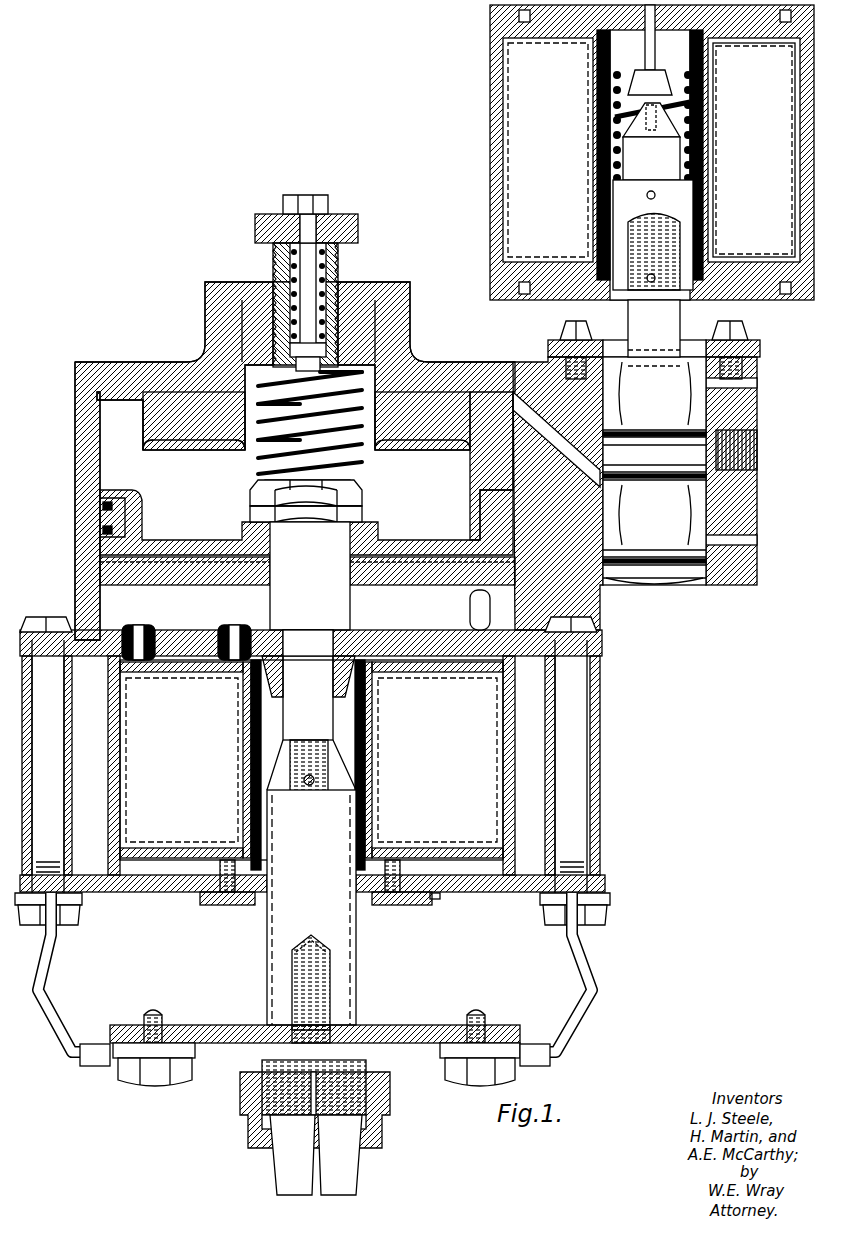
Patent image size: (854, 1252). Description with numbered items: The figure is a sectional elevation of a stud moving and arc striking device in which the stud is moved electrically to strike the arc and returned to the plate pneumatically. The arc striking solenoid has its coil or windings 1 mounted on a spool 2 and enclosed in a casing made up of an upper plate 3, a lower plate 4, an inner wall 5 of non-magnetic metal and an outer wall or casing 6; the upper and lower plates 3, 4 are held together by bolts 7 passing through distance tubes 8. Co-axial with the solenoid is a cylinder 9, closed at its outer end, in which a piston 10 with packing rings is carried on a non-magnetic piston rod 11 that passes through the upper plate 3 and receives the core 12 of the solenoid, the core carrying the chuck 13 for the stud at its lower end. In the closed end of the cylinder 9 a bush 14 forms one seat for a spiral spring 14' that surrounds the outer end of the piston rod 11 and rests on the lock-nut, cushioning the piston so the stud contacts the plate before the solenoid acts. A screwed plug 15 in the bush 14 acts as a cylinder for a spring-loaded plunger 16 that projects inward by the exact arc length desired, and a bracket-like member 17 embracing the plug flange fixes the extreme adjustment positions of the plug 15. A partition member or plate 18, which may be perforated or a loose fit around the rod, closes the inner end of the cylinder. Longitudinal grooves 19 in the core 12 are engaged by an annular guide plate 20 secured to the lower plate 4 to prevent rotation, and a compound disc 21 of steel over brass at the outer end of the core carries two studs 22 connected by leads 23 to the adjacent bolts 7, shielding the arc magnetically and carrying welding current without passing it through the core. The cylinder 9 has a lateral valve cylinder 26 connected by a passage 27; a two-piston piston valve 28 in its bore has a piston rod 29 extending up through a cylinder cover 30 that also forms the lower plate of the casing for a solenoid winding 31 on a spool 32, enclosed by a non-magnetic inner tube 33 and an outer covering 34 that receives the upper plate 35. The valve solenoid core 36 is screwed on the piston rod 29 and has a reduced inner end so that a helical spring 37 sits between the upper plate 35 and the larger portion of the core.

The coil or windings 1 is at (480, 705).
The spool 2 is at (470, 850).
The upper plate 3 is at (95, 630).
The lower plate 4 is at (165, 885).
The inner wall 5 is at (418, 892).
The outer wall or casing 6 is at (515, 755).
The bolts 7 is at (48, 752).
The distance tubes 8 is at (75, 802).
The cylinder 9 is at (95, 540).
The piston 10 is at (125, 508).
The piston rod 11 is at (295, 601).
The core 12 is at (288, 932).
The chuck 13 is at (250, 1088).
The bush 14 is at (295, 445).
The spiral spring 14' is at (360, 400).
The screwed plug 15 is at (358, 224).
The plunger 16 is at (273, 268).
The bracket-like member 17 is at (312, 192).
The partition member or plate 18 is at (100, 566).
The longitudinal grooves 19 is at (272, 990).
The annular guide plate 20 is at (220, 900).
The compound disc 21 is at (395, 1043).
The studs 22 is at (125, 1070).
The leads 23 is at (50, 990).
The valve cylinder 26 is at (745, 500).
The passage 27 is at (540, 430).
The piston valve 28 is at (655, 500).
The piston rod 29 is at (655, 322).
The cylinder cover 30 is at (730, 350).
The solenoid winding 31 is at (754, 150).
The spool 32 is at (750, 22).
The inner tube 33 is at (705, 112).
The outer covering 34 is at (805, 150).
The upper plate 35 is at (588, 22).
The solenoid core 36 is at (620, 200).
The helical spring 37 is at (597, 135).